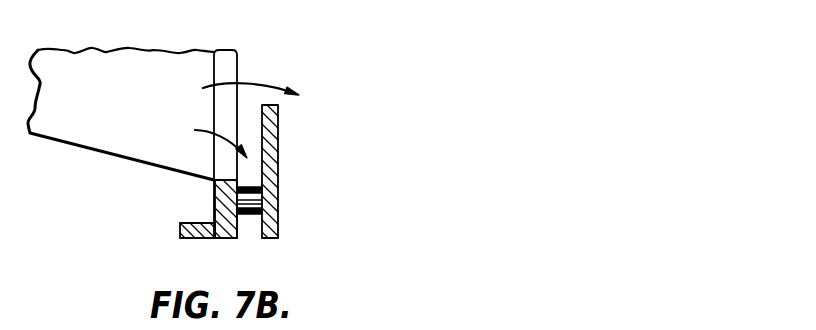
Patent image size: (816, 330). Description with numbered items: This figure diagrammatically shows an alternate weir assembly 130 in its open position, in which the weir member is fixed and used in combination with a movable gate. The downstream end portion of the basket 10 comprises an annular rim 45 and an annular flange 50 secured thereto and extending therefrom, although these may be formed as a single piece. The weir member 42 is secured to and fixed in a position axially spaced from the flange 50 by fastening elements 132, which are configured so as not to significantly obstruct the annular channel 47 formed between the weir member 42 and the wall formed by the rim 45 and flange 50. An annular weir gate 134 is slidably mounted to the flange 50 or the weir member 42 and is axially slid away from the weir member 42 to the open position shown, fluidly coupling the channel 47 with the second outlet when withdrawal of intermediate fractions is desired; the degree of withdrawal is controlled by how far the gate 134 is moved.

The basket 10 is at (128, 160).
The annular rim 45 is at (227, 65).
The weir member 42 is at (277, 132).
The annular flange 50 is at (213, 199).
The annular weir gate 134 is at (212, 237).
The fastening elements 132 is at (262, 212).
The channel 47 is at (248, 224).
The weir assembly 130 is at (396, 89).